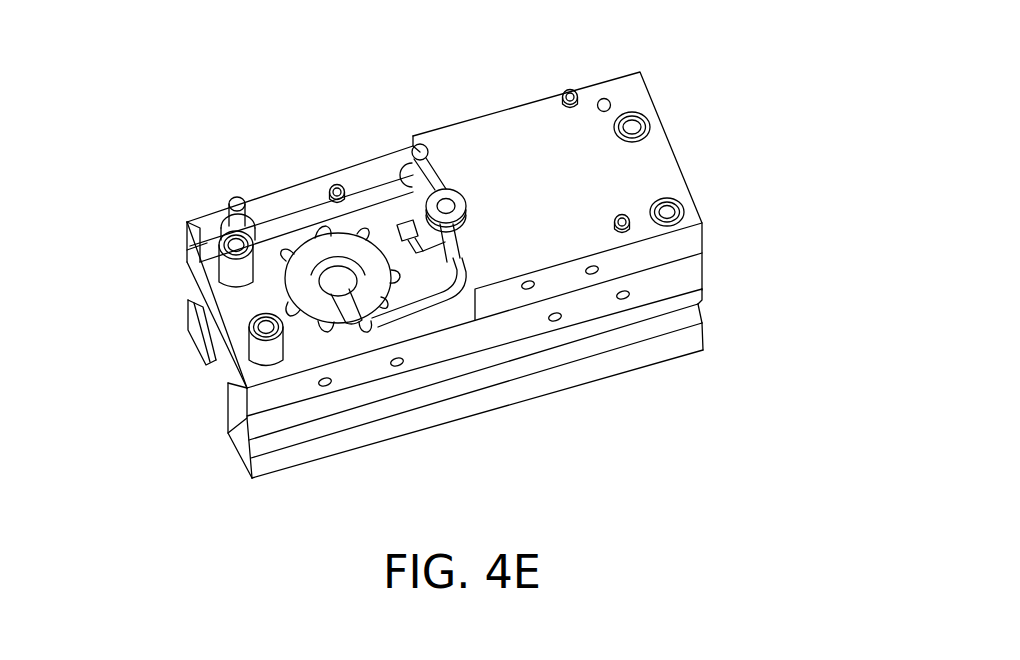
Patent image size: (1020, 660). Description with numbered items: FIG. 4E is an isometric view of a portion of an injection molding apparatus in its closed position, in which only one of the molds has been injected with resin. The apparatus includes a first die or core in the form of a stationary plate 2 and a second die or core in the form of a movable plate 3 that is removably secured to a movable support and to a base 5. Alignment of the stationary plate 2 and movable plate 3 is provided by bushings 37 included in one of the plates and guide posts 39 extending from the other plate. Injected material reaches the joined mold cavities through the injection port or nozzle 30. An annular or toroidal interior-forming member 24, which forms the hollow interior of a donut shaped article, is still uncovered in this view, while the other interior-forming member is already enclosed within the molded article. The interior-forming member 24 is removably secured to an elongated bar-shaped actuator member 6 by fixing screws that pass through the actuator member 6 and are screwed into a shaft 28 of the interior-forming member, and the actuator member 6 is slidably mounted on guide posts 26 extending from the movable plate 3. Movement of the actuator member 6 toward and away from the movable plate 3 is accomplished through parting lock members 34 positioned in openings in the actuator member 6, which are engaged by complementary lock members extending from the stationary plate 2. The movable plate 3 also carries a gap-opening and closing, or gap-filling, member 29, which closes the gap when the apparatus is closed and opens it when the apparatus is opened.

The stationary plate 2 is at (508, 185).
The movable plate 3 is at (240, 305).
The base 5 is at (690, 322).
The actuator member 6 is at (203, 222).
The interior-forming member 24 is at (317, 232).
The guide posts 26 is at (233, 200).
The shafts 28 is at (277, 216).
The gap-opening and closing member 29 is at (352, 316).
The injection port or nozzle 30 is at (448, 188).
The parting lock members 34 is at (333, 189).
The bushings 37 is at (237, 273).
The guide posts 39 is at (233, 245).